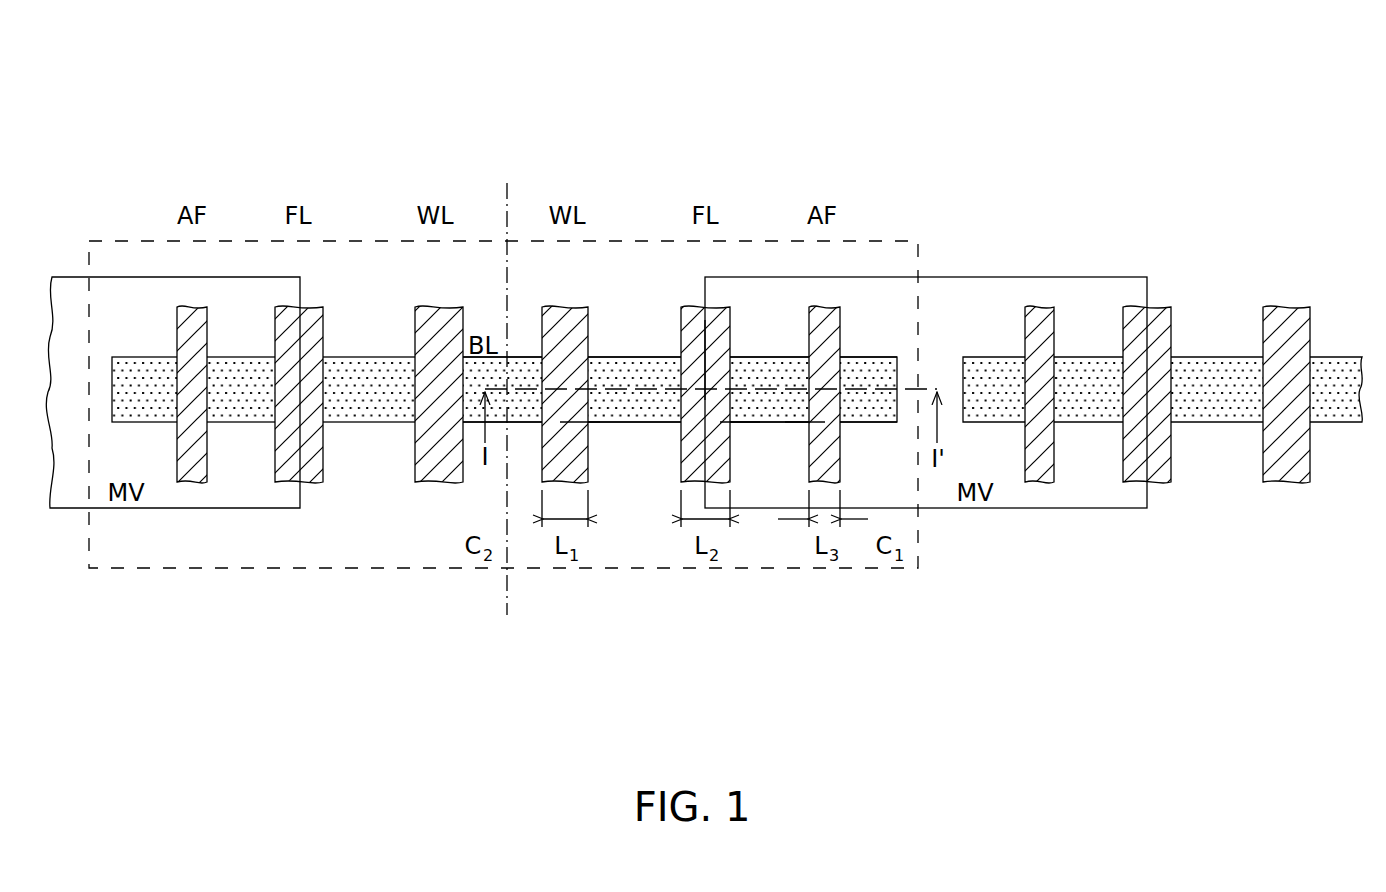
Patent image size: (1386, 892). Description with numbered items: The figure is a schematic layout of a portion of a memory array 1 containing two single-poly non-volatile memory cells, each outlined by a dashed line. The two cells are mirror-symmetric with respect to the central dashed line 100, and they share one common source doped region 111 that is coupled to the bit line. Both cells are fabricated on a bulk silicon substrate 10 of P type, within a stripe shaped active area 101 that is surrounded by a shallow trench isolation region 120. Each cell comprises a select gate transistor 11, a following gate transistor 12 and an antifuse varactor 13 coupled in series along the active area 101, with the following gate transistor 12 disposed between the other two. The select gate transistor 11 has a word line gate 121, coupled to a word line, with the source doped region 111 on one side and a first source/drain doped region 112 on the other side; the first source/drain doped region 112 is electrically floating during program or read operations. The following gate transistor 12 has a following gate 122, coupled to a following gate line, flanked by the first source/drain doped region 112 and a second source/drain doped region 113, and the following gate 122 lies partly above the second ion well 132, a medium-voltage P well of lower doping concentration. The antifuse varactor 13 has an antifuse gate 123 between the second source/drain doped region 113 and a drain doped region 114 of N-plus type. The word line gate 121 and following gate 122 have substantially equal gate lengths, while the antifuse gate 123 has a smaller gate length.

The memory array 1 is at (1185, 122).
The bulk silicon substrate 10 is at (965, 596).
The central dashed line 100 is at (507, 200).
The active area 101 is at (882, 425).
The select gate transistor 11 is at (602, 434).
The following gate transistor 12 is at (739, 434).
The antifuse varactor 13 is at (799, 434).
The source doped region 111 is at (524, 365).
The first source/drain doped region 112 is at (636, 365).
The second source/drain doped region 113 is at (772, 365).
The drain doped region 114 is at (871, 365).
The shallow trench isolation region 120 is at (930, 353).
The word line gate 121 is at (566, 318).
The following gate 122 is at (694, 320).
The antifuse gate 123 is at (822, 312).
The second ion well 132 is at (1088, 274).